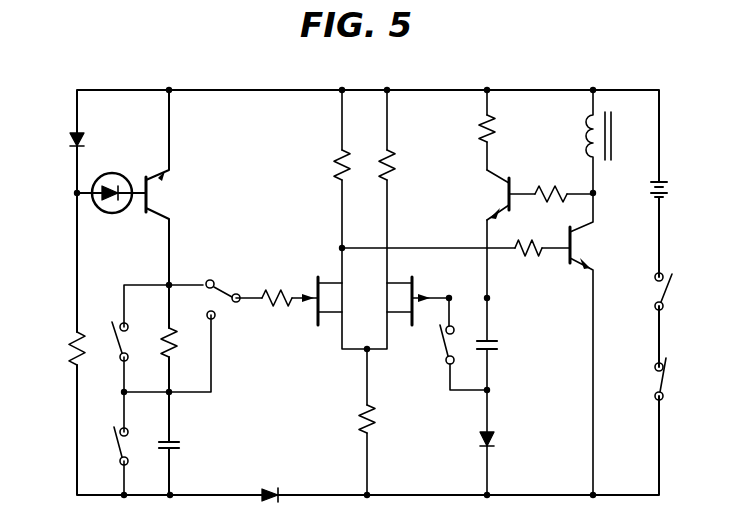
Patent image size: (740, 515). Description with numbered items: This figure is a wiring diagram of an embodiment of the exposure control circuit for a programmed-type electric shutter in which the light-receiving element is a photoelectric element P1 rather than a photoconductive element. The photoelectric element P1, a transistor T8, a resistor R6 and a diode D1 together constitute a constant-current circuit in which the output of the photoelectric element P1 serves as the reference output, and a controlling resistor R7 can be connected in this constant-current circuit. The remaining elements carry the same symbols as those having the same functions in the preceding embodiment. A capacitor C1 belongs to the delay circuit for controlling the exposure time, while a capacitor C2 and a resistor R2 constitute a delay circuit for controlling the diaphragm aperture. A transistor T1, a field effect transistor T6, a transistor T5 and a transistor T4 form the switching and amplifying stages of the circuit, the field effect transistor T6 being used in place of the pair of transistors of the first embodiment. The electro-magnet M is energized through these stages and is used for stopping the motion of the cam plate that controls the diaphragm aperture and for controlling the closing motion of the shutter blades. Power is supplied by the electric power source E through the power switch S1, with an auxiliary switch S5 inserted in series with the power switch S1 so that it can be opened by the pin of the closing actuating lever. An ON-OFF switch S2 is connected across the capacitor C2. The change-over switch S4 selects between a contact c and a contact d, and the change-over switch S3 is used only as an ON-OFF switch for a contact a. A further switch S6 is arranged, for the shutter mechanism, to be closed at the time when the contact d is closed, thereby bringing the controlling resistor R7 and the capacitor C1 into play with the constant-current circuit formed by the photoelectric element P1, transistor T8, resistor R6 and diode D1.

The diode D1 is at (70, 140).
The transistor T8 is at (146, 186).
The photoelectric element P1 is at (112, 213).
The contact c is at (208, 280).
The contact d is at (207, 315).
The change-over switch S4 is at (226, 310).
The resistor R6 is at (70, 342).
The switch S6 is at (118, 350).
The controlling resistor R7 is at (178, 346).
The change-over switch S3 is at (116, 446).
The contact a is at (128, 432).
The capacitor C1 is at (180, 446).
The transistor T1 is at (314, 316).
The field effect transistor T6 is at (416, 282).
The ON-OFF switch S2 is at (444, 350).
The capacitor C2 is at (497, 350).
The resistor R2 is at (478, 130).
The transistor T5 is at (511, 182).
The transistor T4 is at (574, 262).
The electro-magnet M is at (612, 140).
The electric power source E is at (668, 192).
The power switch S1 is at (668, 290).
The auxiliary switch S5 is at (668, 366).